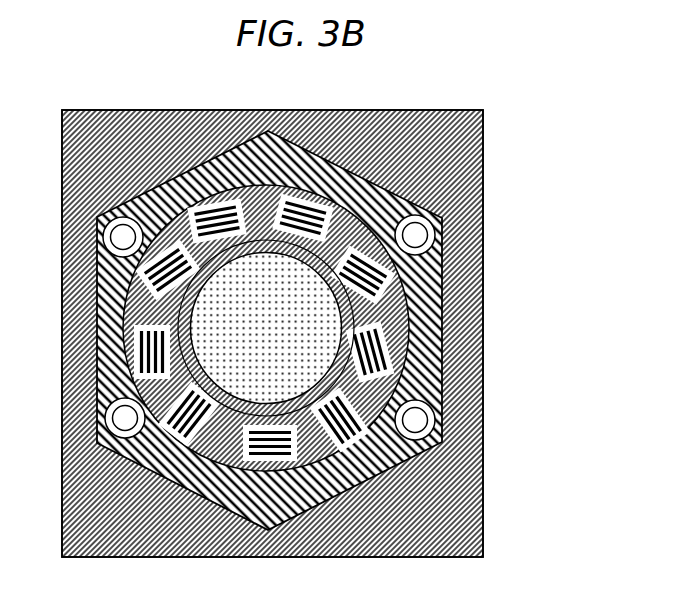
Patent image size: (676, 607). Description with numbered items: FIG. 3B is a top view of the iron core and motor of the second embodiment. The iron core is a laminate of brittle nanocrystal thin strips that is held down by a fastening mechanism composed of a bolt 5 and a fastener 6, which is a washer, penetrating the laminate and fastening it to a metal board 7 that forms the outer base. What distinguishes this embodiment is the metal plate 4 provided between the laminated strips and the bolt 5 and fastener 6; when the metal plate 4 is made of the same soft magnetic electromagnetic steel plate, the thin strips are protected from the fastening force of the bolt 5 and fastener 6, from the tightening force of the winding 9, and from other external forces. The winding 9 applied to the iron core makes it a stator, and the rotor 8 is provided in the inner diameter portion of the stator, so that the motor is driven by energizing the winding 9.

The metal plate 4 is at (420, 348).
The bolt 5 is at (435, 232).
The fastener 6 is at (421, 245).
The metal board 7 is at (417, 503).
The rotor 8 is at (280, 308).
The winding 9 is at (199, 189).